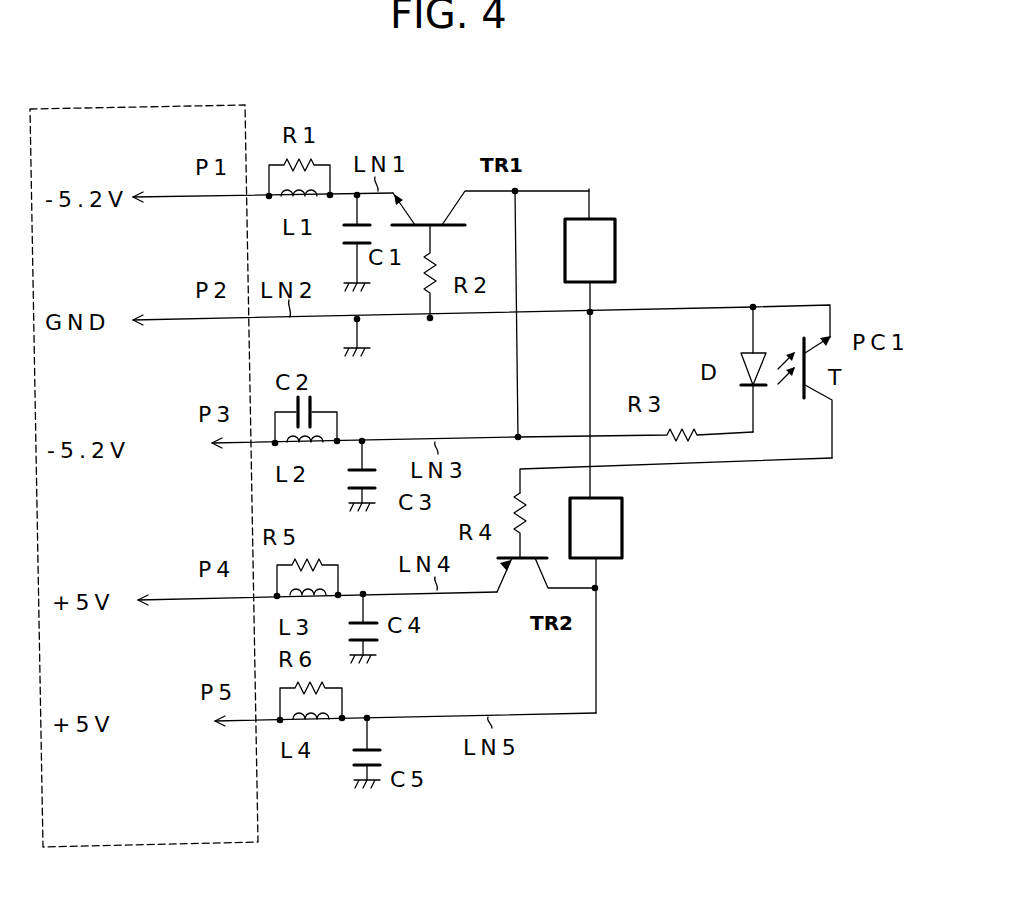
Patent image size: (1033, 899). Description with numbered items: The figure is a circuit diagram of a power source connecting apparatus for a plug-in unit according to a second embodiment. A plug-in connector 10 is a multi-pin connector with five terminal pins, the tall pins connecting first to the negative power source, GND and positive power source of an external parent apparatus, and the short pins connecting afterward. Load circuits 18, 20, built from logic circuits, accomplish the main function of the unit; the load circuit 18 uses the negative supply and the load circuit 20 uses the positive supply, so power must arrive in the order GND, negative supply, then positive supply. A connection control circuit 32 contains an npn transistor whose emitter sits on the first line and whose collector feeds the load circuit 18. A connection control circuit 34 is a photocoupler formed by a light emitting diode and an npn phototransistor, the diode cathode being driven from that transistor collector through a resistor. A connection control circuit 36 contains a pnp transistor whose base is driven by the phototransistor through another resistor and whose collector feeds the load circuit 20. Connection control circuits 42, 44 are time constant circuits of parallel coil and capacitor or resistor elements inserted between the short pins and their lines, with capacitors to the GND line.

The plug-in connector 10 is at (207, 105).
The load circuit 18 is at (616, 246).
The load circuit 20 is at (622, 520).
The connection control circuit 32 is at (448, 175).
The connection control circuit 34 is at (784, 304).
The connection control circuit 36 is at (518, 583).
The connection control circuit 42 is at (340, 425).
The connection control circuit 44 is at (348, 699).